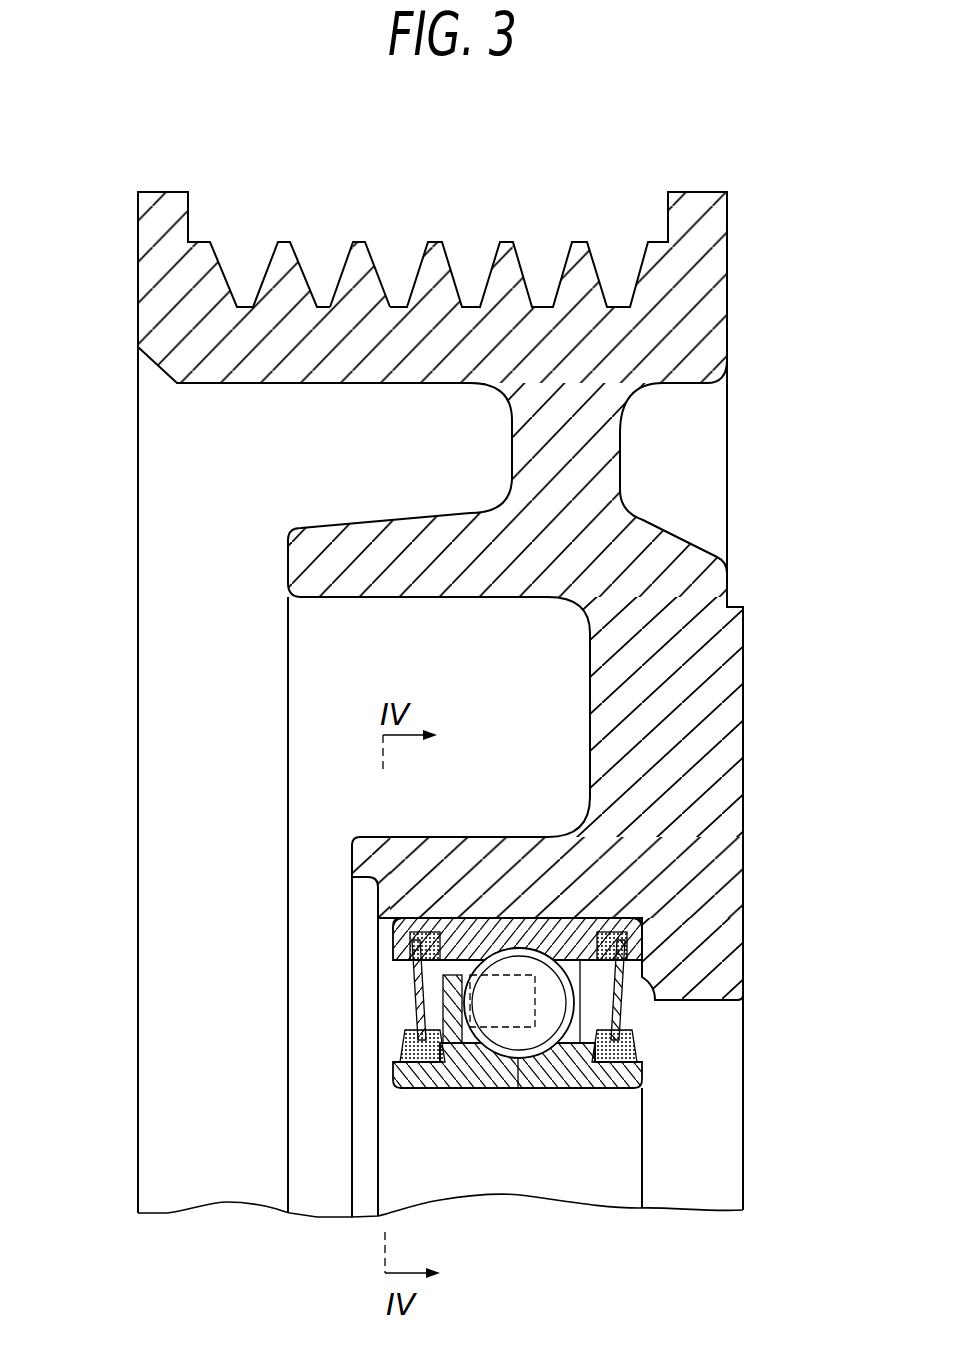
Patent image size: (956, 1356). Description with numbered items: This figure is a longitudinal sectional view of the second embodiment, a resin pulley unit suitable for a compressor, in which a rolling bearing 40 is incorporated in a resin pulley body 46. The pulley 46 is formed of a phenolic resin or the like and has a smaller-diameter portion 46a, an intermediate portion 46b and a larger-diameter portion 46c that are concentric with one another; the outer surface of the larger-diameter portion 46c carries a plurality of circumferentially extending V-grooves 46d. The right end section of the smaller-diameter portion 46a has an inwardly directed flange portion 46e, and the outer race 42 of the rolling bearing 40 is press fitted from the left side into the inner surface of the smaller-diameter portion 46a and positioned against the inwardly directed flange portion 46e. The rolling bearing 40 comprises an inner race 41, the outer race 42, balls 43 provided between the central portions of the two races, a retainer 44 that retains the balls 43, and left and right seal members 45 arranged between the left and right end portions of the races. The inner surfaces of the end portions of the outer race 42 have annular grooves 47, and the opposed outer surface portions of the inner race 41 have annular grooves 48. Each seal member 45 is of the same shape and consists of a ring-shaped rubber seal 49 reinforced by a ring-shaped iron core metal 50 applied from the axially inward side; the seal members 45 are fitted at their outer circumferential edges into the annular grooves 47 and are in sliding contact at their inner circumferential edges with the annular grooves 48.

The rolling bearing 40 is at (515, 972).
The inner race 41 is at (393, 1088).
The outer race 42 is at (402, 927).
The balls 43 is at (519, 1088).
The retainer 44 is at (430, 998).
The seal members 45 is at (408, 1062).
The resin pulley body 46 is at (727, 573).
The smaller-diameter portion 46a is at (373, 857).
The intermediate portion 46b is at (289, 563).
The larger-diameter portion 46c is at (145, 278).
The V-grooves 46d is at (357, 262).
The inwardly directed flange portion 46e is at (735, 930).
The annular grooves 47 is at (413, 920).
The annular grooves 48 is at (441, 1088).
The rubber seal 49 is at (415, 956).
The core metal 50 is at (388, 1037).